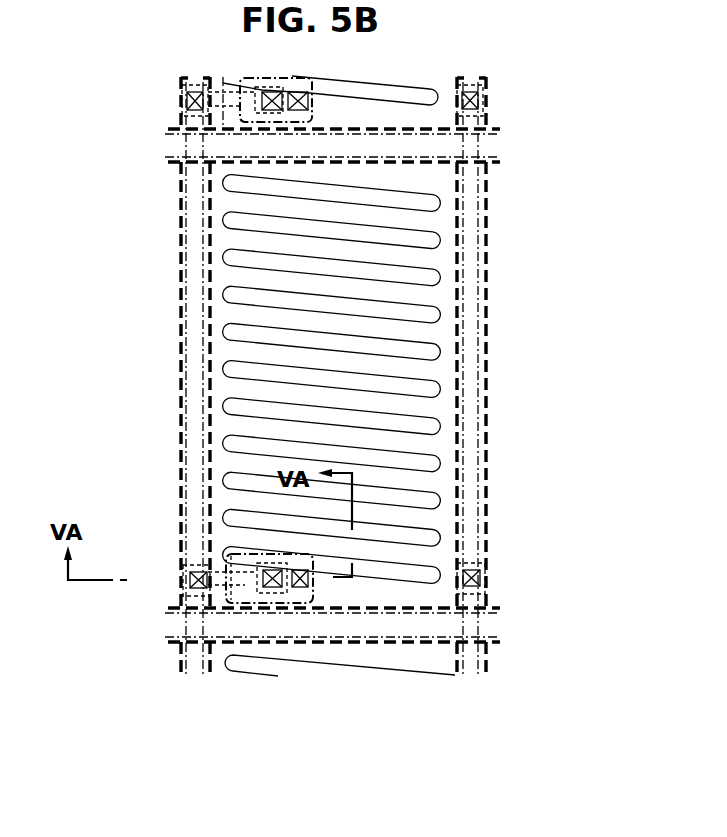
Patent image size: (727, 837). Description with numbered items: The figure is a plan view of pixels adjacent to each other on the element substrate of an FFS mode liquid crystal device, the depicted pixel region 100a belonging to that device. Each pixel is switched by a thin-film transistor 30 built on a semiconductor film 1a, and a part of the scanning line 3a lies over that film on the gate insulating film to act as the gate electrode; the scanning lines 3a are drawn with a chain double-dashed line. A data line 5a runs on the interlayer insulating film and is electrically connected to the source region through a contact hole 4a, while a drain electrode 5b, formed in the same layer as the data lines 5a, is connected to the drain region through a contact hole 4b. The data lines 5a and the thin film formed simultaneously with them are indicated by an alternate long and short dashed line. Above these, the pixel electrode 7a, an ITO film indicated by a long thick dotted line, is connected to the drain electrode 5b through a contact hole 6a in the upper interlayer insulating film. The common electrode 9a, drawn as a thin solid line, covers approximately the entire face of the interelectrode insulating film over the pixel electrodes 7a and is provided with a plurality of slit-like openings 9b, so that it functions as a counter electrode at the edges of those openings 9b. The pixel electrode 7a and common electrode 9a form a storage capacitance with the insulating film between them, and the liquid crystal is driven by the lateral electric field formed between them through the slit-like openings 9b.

The semiconductor film 1a is at (231, 600).
The scanning line 3a is at (505, 130).
The contact hole 4a is at (188, 578).
The contact hole 4b is at (272, 595).
The data line 5a is at (477, 67).
The drain electrode 5b is at (288, 615).
The contact hole 6a is at (318, 594).
The pixel electrode 7a is at (220, 378).
The common electrode 9a is at (430, 408).
The slit-like opening 9b is at (357, 446).
The thin-film transistor 30 is at (249, 636).
The pixel electrode 100a is at (446, 254).